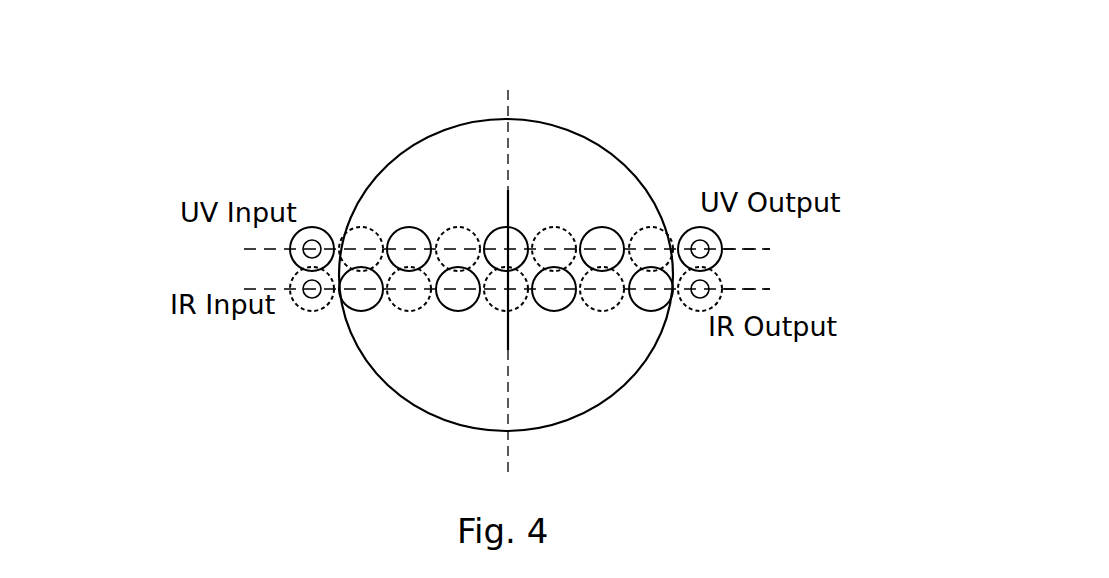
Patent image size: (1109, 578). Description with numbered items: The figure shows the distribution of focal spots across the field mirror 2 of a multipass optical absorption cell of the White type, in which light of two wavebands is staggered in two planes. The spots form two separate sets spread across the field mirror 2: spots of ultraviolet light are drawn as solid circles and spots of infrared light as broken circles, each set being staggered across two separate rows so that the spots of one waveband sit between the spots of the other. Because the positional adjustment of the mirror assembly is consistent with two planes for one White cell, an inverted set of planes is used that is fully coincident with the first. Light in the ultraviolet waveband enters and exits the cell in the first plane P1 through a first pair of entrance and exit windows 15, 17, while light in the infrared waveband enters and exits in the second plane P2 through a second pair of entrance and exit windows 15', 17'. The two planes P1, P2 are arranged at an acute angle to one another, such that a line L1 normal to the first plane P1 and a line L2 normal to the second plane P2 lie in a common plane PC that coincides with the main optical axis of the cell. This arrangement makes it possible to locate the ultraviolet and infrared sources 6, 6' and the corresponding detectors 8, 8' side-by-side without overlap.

The field mirror 2 is at (533, 142).
The source 6 is at (312, 196).
The source 6' is at (312, 345).
The detector 8 is at (693, 199).
The detector 8' is at (700, 365).
The entrance window 15 is at (434, 230).
The entrance window 15' is at (431, 277).
The exit window 17 is at (821, 255).
The exit window 17' is at (824, 293).
The first plane P1 is at (397, 248).
The second plane P2 is at (395, 290).
The line normal to the first plane L1 is at (508, 210).
The line normal to the second plane L2 is at (508, 322).
The common plane PC is at (508, 381).